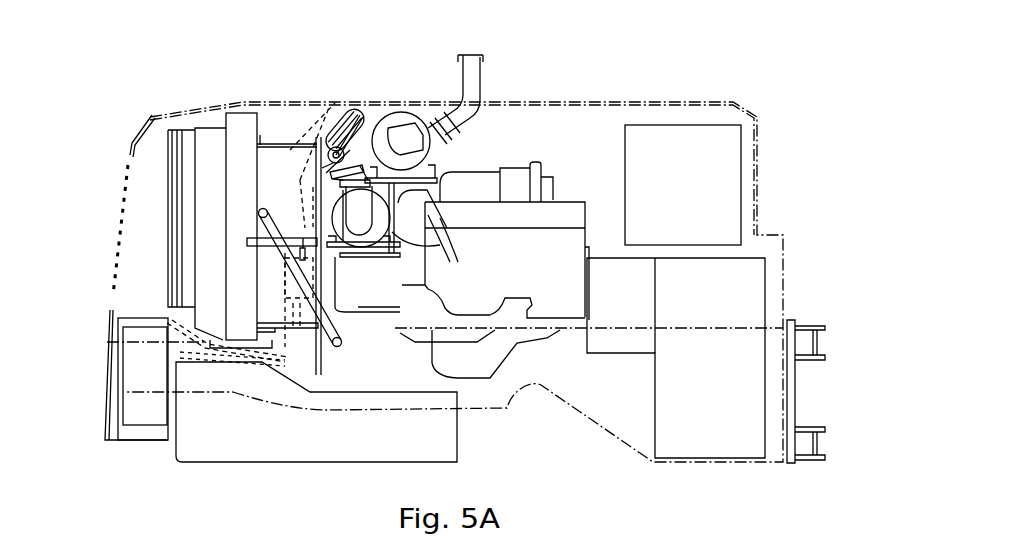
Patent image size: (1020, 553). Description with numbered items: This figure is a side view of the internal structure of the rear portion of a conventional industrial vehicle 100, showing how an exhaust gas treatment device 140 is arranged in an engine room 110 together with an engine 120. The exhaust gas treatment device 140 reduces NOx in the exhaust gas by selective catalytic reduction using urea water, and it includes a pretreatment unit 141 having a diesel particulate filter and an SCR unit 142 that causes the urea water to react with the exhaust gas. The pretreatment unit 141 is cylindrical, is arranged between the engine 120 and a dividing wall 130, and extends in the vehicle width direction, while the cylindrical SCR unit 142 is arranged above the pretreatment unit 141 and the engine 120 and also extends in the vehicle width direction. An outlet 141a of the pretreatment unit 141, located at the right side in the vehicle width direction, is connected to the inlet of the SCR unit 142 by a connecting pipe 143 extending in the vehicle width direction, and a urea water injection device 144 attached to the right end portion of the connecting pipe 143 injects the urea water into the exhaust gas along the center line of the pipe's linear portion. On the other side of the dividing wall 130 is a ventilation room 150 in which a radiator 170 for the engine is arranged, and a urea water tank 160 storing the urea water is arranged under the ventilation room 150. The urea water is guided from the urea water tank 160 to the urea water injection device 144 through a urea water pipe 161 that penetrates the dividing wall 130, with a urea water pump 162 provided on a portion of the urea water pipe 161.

The industrial vehicle 100 is at (563, 70).
The engine room 110 is at (613, 127).
The engine 120 is at (557, 277).
The dividing wall 130 is at (340, 350).
The exhaust gas treatment device 140 is at (382, 110).
The pretreatment unit 141 is at (400, 205).
The outlet 141a is at (362, 178).
The SCR unit 142 is at (373, 127).
The connecting pipe 143 is at (333, 160).
The urea water injection device 144 is at (323, 170).
The ventilation room 150 is at (287, 120).
The urea water tank 160 is at (140, 407).
The urea water pipe 161 is at (290, 357).
The urea water pump 162 is at (285, 283).
The radiator 170 is at (240, 115).